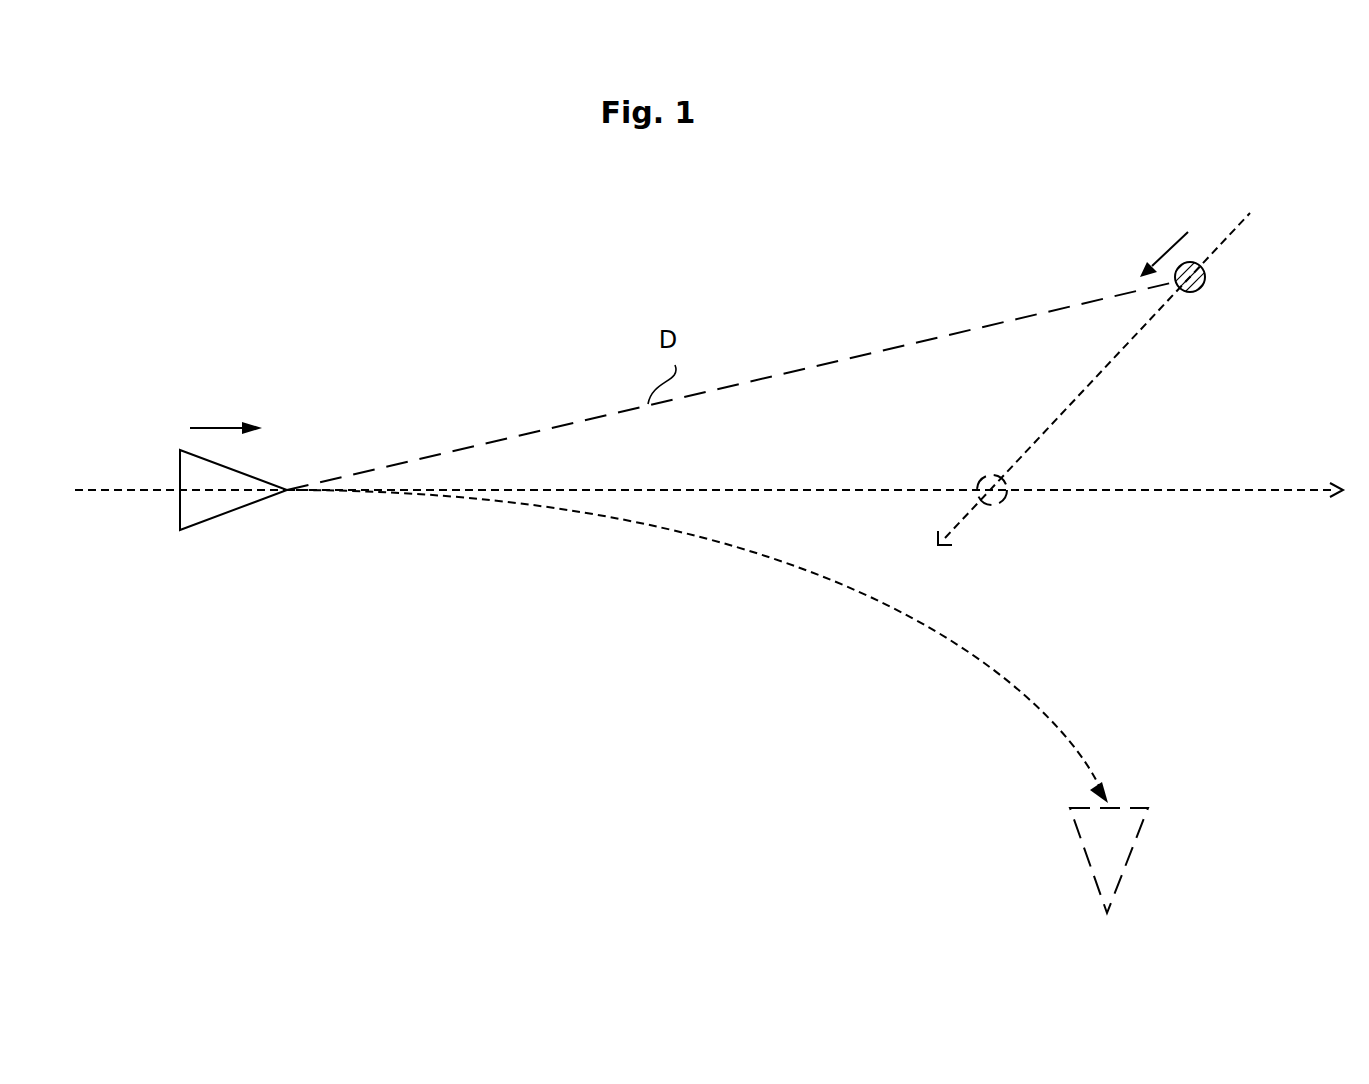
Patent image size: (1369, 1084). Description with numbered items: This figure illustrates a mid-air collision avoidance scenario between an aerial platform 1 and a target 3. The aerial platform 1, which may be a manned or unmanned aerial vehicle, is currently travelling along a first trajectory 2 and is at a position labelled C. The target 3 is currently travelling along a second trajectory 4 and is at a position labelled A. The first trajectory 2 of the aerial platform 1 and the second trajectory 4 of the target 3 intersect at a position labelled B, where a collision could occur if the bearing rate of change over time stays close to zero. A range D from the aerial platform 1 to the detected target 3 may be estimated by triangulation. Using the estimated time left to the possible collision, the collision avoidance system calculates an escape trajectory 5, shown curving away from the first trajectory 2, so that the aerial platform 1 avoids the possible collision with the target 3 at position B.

The aerial platform 1 is at (180, 462).
The first trajectory 2 is at (1272, 492).
The target 3 is at (1205, 278).
The second trajectory 4 is at (1100, 373).
The escape trajectory 5 is at (1050, 718).